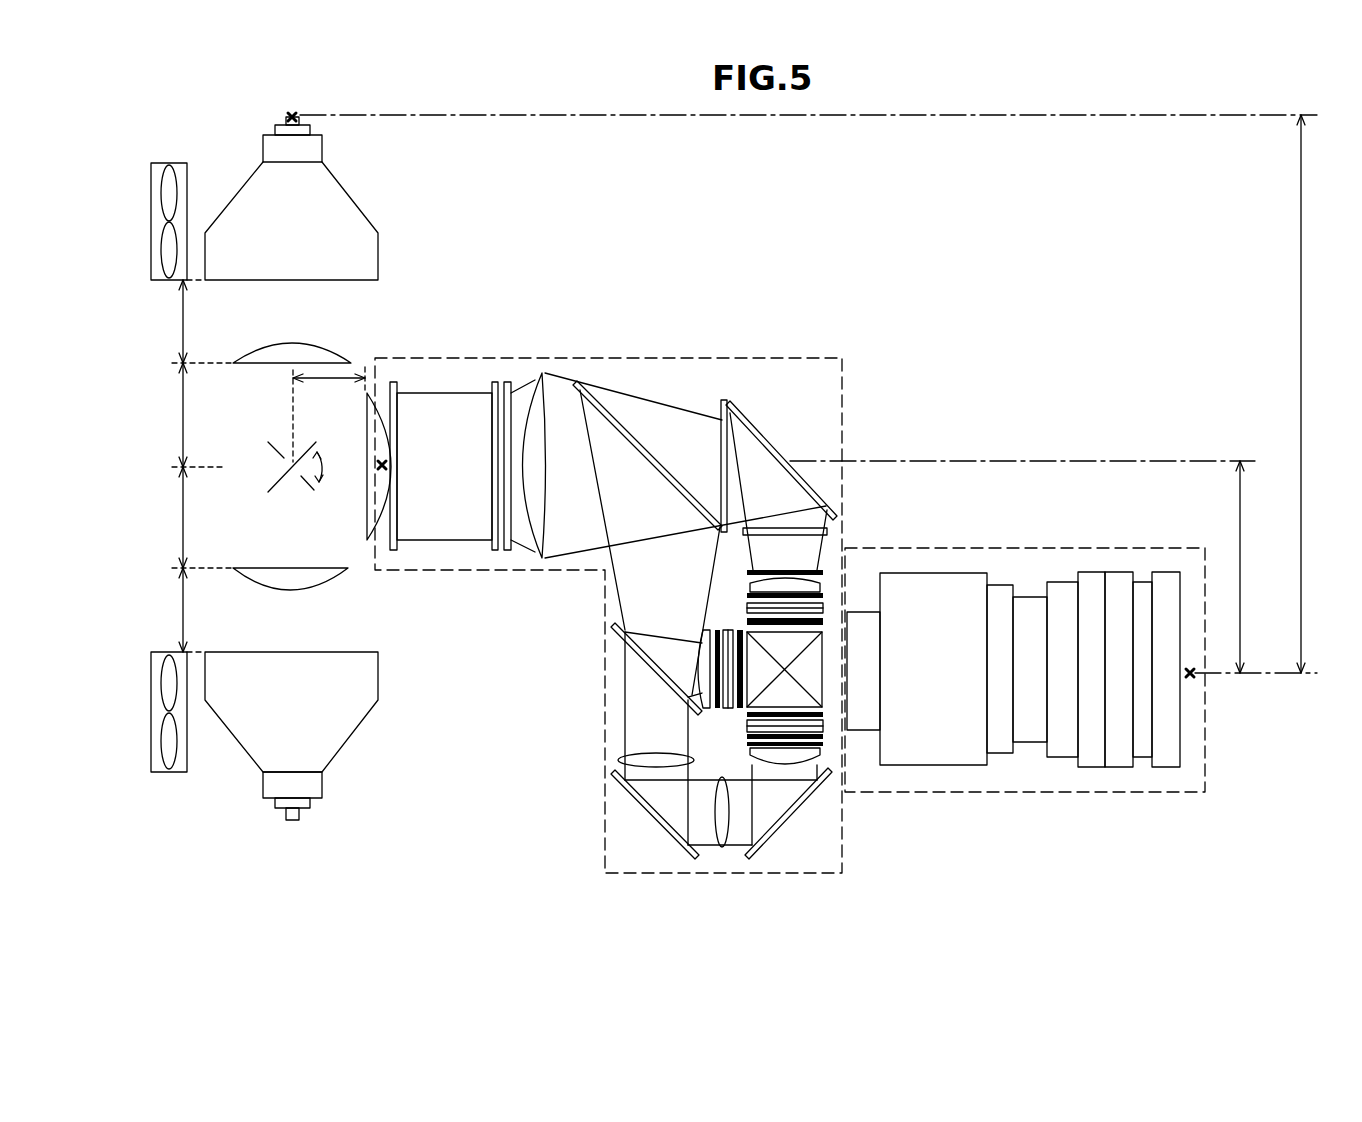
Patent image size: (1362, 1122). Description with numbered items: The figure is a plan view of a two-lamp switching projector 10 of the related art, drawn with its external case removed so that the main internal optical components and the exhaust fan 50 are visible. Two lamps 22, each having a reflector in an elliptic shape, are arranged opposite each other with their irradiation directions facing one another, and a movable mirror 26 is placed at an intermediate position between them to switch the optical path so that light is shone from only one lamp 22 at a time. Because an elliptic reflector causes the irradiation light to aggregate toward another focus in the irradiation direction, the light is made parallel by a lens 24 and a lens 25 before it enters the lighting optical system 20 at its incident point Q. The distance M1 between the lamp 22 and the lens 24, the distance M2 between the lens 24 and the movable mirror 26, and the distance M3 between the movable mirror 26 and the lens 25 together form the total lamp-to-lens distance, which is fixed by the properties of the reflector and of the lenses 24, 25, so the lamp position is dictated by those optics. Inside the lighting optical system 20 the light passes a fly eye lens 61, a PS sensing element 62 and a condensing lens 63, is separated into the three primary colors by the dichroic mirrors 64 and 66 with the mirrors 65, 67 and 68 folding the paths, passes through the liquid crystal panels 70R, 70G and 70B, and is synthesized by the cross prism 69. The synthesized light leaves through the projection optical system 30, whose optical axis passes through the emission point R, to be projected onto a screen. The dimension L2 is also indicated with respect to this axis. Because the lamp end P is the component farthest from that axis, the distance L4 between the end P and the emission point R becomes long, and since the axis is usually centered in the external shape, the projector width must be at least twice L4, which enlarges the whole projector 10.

The projector 10 is at (1113, 92).
The lighting optical system 20 is at (808, 358).
The lamp 22 is at (348, 192).
The lens 24 is at (262, 345).
The lens 25 is at (371, 545).
The movable mirror 26 is at (276, 486).
The projection optical system 30 is at (1060, 580).
The exhaust fan 50 is at (172, 163).
The fly eye lens 61 is at (393, 382).
The PS sensing element 62 is at (507, 382).
The condensing lens 63 is at (541, 373).
The dichroic mirror 64 is at (593, 393).
The mirror 65 is at (740, 410).
The dichroic mirror 66 is at (620, 636).
The mirror 67 is at (672, 852).
The mirror 68 is at (765, 852).
The cross prism 69 is at (812, 678).
The liquid crystal panel 70B is at (748, 612).
The liquid crystal panel 70G is at (724, 710).
The liquid crystal panel 70R is at (823, 725).
The end of the lamp P is at (292, 110).
The incident point Q is at (382, 393).
The emission point R is at (1195, 680).
The distance M1 is at (189, 466).
The distance M2 is at (161, 473).
The distance M3 is at (329, 414).
The distance L2 is at (1053, 567).
The distance L4 is at (1317, 394).